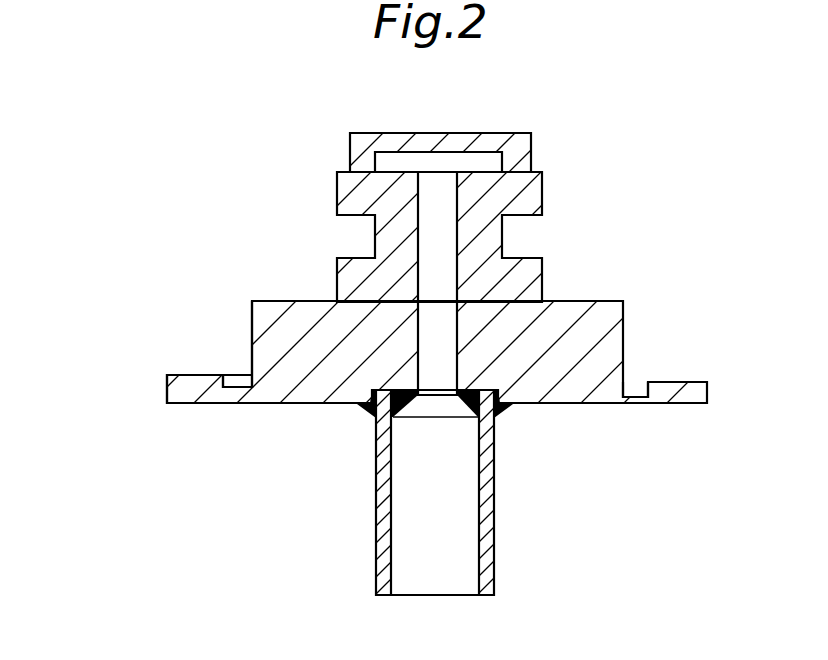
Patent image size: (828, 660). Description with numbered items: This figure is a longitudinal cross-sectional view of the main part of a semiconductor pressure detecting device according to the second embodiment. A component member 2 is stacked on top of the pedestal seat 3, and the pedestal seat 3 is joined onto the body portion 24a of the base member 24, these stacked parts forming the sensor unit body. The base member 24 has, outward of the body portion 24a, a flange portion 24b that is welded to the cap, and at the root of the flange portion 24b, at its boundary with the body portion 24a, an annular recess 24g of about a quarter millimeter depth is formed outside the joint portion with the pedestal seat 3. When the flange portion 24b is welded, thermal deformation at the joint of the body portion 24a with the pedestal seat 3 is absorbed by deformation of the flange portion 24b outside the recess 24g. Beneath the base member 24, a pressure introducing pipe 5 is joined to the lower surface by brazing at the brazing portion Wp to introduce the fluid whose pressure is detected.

The component member 2 is at (478, 133).
The pedestal seat 3 is at (543, 192).
The base member 24 is at (593, 301).
The body portion 24a is at (252, 336).
The flange portion 24b is at (167, 386).
The annular recess 24g is at (641, 388).
The brazing portion Wp is at (370, 412).
The pressure introducing pipe 5 is at (494, 522).